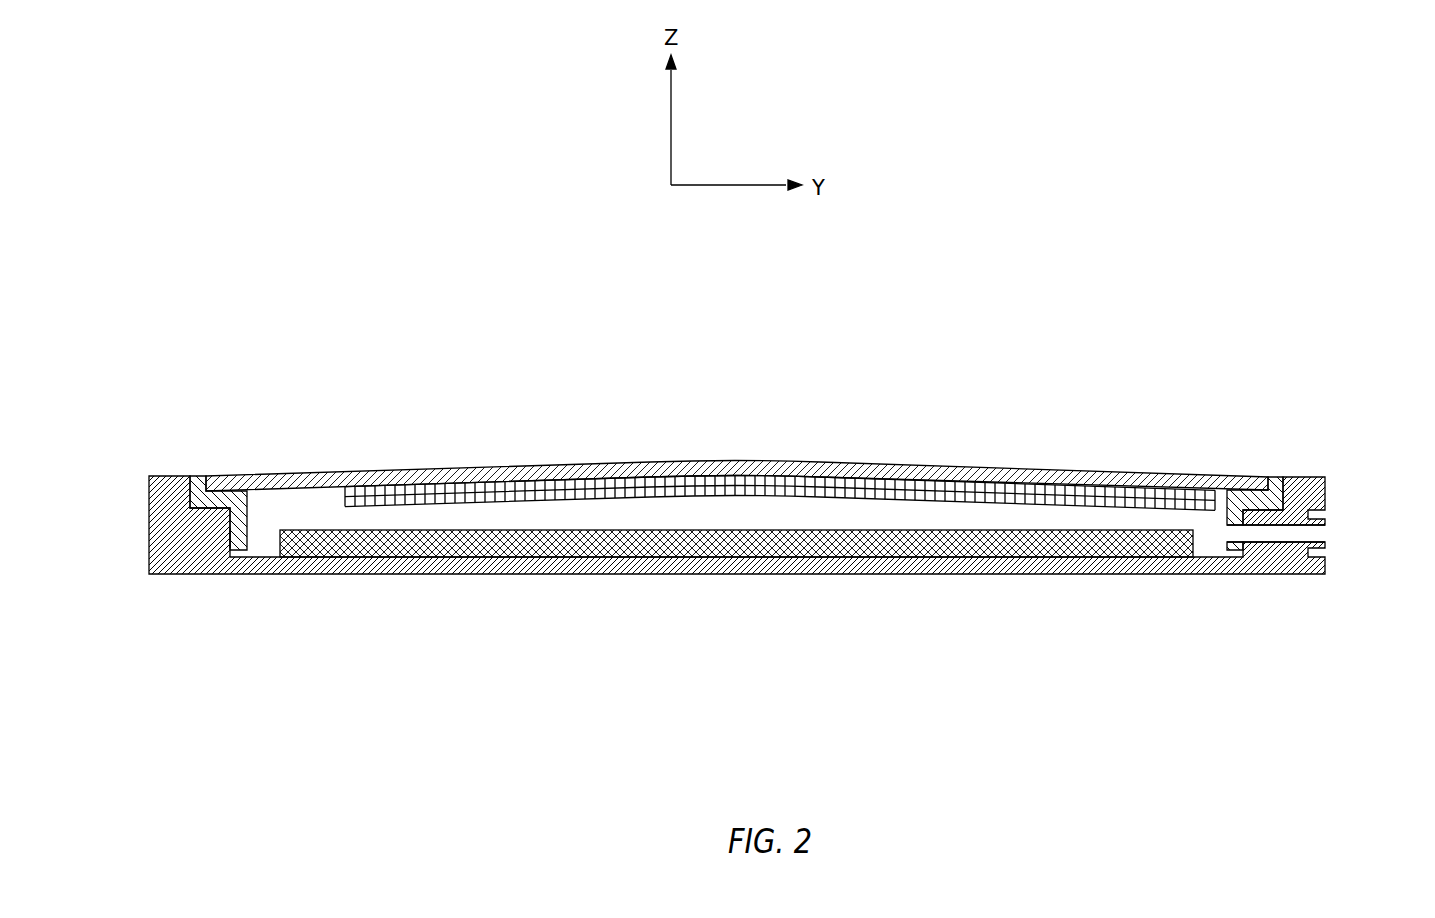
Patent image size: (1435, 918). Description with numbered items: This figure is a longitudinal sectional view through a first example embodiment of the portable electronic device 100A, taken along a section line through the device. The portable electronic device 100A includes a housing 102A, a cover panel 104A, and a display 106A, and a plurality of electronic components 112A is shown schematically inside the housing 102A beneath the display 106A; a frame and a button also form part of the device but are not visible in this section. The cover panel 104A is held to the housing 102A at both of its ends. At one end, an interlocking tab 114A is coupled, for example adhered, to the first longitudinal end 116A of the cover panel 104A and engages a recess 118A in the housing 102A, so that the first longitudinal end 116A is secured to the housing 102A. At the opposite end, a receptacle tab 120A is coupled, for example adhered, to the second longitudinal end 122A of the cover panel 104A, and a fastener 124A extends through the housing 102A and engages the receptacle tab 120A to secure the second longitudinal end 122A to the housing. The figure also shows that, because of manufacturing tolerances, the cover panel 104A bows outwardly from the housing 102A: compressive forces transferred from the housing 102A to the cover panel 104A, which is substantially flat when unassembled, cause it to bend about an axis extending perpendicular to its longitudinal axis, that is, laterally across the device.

The portable electronic device 100A is at (308, 212).
The housing 102A is at (185, 573).
The cover panel 104A is at (570, 465).
The display 106A is at (888, 500).
The electronic components 112A is at (653, 530).
The interlocking tab 114A is at (202, 477).
The first longitudinal end 116A is at (214, 445).
The recess 118A is at (230, 530).
The receptacle tab 120A is at (1273, 477).
The second longitudinal end 122A is at (1264, 435).
The fastener 124A is at (1326, 533).